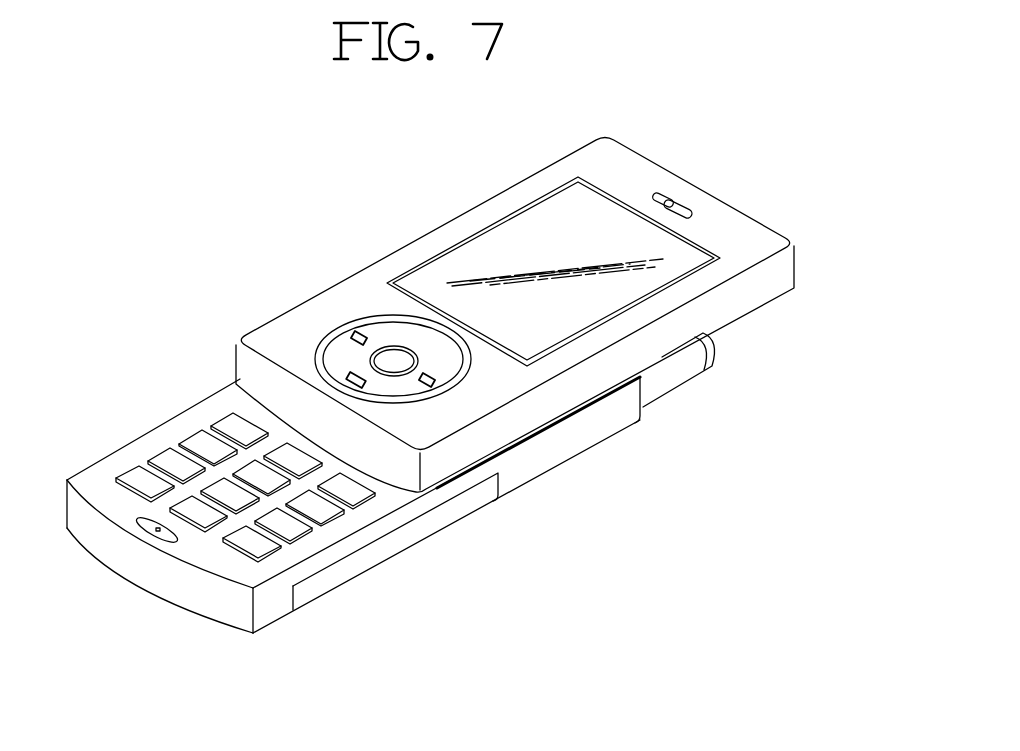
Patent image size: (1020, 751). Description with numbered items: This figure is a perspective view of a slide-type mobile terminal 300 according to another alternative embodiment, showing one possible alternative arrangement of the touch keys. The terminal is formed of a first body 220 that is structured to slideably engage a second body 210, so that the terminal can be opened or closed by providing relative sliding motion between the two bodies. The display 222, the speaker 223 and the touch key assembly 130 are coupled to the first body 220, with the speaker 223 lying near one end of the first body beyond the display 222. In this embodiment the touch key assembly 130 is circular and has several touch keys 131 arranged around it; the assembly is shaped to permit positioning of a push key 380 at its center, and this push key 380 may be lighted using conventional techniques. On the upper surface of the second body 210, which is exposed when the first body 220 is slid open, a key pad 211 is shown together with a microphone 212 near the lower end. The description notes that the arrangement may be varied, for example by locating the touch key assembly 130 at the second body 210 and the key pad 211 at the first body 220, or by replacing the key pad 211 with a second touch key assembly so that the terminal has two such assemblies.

The mobile terminal 300 is at (224, 252).
The first body 220 is at (742, 326).
The display 222 is at (495, 257).
The speaker 223 is at (676, 204).
The touch key assembly 130 is at (360, 313).
The touch keys 131 is at (350, 379).
The push key 380 is at (393, 357).
The second body 210 is at (533, 480).
The key pad 211 is at (263, 548).
The microphone 212 is at (151, 532).